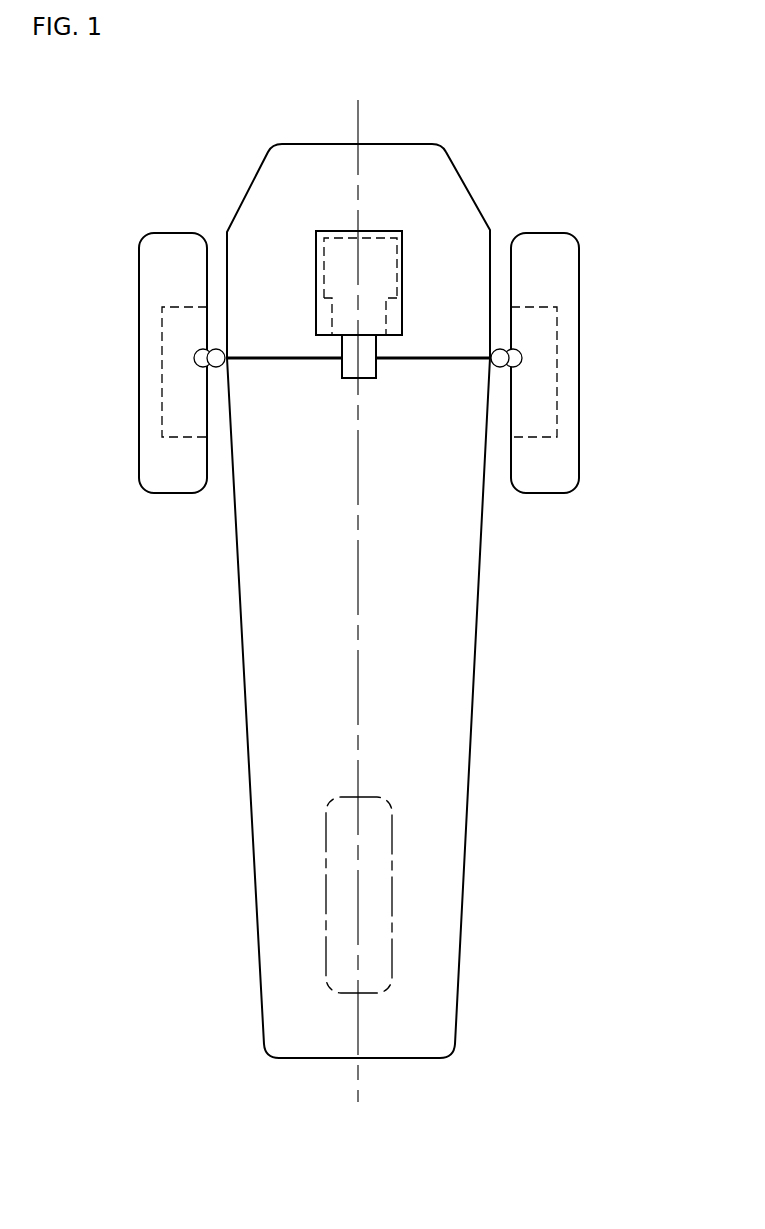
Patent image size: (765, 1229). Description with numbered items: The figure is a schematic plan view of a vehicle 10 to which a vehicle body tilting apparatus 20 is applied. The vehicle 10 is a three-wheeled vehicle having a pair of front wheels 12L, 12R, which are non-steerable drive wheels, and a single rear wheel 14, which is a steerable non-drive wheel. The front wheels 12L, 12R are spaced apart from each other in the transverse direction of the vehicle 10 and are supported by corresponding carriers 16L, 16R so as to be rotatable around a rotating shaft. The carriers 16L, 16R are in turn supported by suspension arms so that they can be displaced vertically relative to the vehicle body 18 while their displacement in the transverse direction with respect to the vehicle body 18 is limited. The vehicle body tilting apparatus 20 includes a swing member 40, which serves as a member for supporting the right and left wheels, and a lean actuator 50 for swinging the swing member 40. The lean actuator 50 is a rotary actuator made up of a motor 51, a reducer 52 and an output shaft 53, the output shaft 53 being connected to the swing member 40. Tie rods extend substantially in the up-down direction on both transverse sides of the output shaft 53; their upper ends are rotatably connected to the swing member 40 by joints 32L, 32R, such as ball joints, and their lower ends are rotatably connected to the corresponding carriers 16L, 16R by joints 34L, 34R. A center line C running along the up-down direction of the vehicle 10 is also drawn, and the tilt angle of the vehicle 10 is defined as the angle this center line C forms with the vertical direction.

The vehicle 10 is at (222, 192).
The front wheel 12L is at (139, 456).
The front wheel 12R is at (579, 456).
The rear wheel 14 is at (376, 797).
The carrier 16L is at (183, 437).
The carrier 16R is at (533, 437).
The vehicle body 18 is at (470, 727).
The vehicle body tilting apparatus 20 is at (437, 216).
The joint 32L is at (216, 367).
The joint 32R is at (500, 367).
The joint 34L is at (196, 352).
The joint 34R is at (520, 352).
The swing member 40 is at (292, 372).
The lean actuator 50 is at (333, 230).
The motor 51 is at (395, 288).
The reducer 52 is at (333, 327).
The output shaft 53 is at (376, 368).
The center line C is at (358, 592).